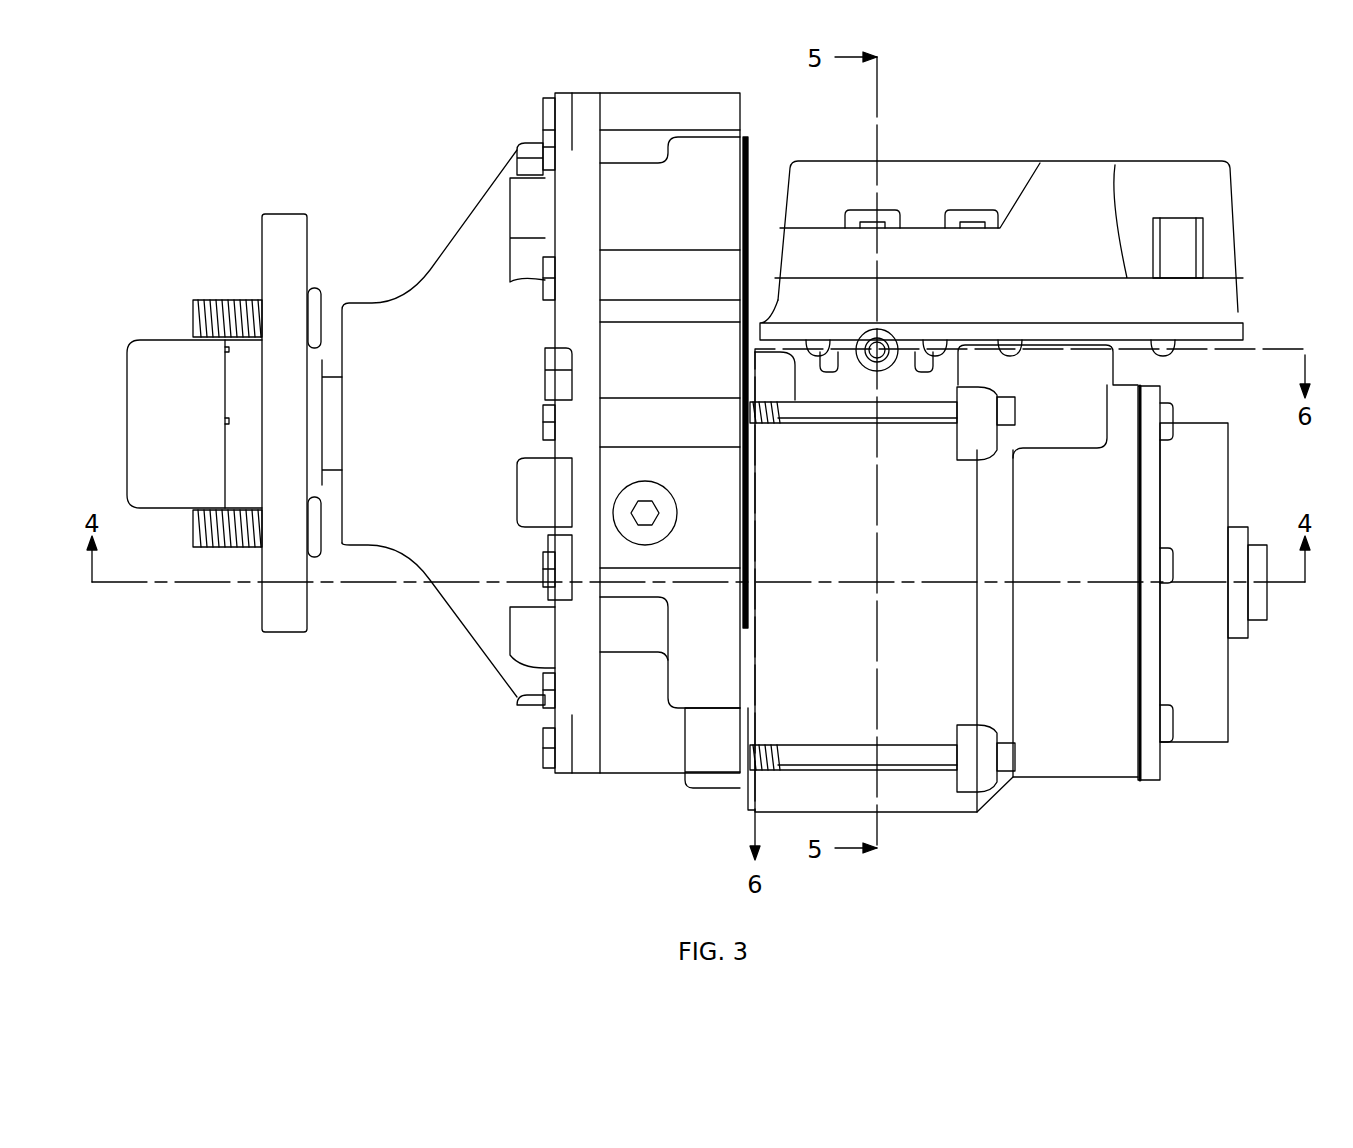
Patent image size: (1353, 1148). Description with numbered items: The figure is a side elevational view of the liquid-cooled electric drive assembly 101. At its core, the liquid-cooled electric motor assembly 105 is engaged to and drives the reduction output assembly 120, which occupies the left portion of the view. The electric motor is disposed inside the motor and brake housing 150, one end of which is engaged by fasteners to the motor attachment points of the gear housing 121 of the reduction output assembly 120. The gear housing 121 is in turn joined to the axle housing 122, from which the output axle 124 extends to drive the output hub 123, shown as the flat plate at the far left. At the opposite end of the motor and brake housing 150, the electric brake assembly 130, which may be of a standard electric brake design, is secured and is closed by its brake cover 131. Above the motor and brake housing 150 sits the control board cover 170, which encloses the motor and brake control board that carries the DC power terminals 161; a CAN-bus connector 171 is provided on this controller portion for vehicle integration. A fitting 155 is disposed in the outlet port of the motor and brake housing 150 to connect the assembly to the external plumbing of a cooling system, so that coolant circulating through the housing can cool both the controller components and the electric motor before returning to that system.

The liquid-cooled electric drive assembly 101 is at (210, 102).
The liquid-cooled electric motor assembly 105 is at (1040, 105).
The reduction output assembly 120 is at (412, 170).
The gear housing 121 is at (655, 451).
The axle housing 122 is at (457, 433).
The output hub 123 is at (284, 212).
The output axle 124 is at (331, 388).
The electric brake assembly 130 is at (1274, 696).
The brake cover 131 is at (1213, 572).
The motor and brake housing 150 is at (1040, 800).
The fitting 155 is at (885, 332).
The DC power terminals 161 is at (968, 212).
The control board cover 170 is at (999, 280).
The CAN-bus connector 171 is at (1177, 218).